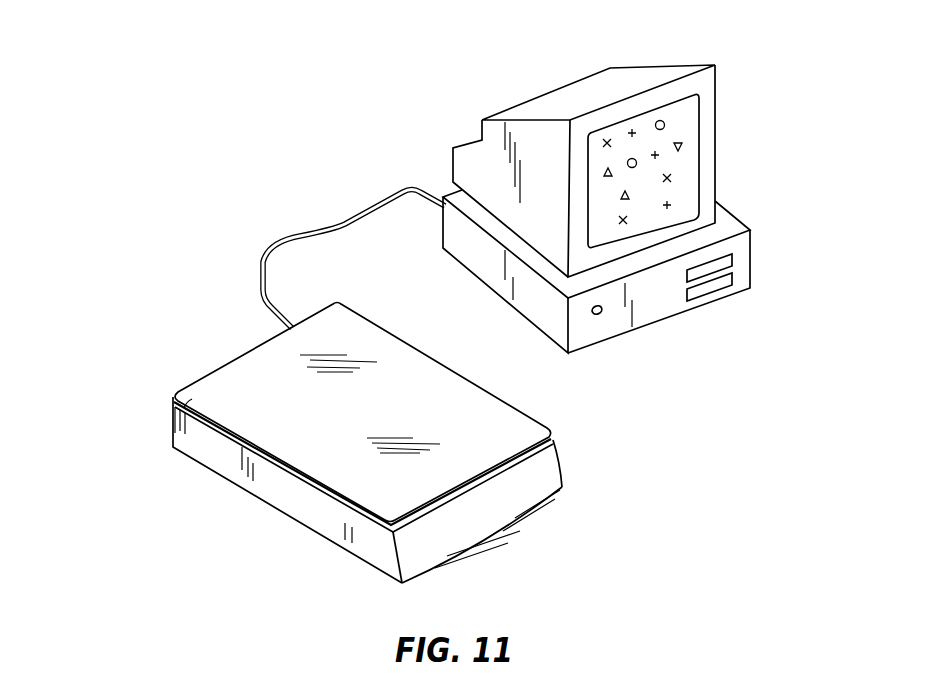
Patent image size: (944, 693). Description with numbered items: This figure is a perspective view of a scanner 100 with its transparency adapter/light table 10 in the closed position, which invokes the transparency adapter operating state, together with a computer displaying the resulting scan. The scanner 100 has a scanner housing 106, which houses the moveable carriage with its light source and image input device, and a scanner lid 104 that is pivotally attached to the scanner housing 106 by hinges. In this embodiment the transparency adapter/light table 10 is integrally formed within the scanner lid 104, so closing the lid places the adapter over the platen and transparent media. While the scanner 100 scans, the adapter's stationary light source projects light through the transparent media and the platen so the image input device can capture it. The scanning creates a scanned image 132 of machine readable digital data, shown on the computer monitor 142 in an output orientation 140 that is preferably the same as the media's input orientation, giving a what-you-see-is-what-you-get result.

The transparency adapter/light table 10 is at (474, 300).
The scanner 100 is at (335, 443).
The scanner lid 104 is at (229, 395).
The scanner housing 106 is at (296, 512).
The computer monitor 142 is at (642, 185).
The scanned image 132 is at (715, 170).
The output orientation 140 is at (696, 157).